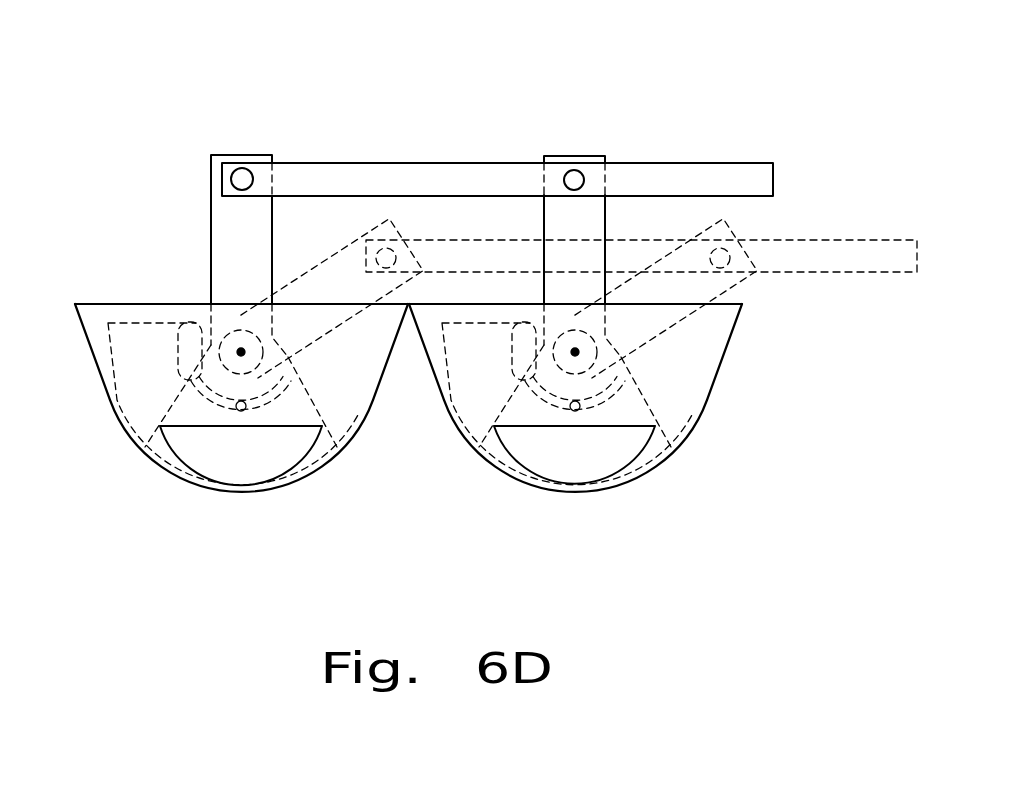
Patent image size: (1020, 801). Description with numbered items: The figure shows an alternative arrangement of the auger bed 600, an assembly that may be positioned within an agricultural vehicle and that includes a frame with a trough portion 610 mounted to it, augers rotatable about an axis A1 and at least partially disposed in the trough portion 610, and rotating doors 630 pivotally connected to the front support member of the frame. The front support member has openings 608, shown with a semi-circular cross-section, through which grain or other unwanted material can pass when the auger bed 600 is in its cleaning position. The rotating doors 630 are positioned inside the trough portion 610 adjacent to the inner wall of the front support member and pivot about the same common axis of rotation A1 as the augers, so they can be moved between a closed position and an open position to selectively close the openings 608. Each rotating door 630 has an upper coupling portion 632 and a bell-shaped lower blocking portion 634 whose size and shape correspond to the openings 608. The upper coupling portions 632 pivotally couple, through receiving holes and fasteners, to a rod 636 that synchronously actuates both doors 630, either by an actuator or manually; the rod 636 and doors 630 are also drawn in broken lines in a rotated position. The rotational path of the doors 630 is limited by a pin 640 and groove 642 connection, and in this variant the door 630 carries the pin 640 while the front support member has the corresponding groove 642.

The auger bed 600 is at (363, 102).
The openings 608 is at (268, 468).
The trough portion 610 is at (732, 340).
The rotating doors 630 is at (222, 238).
The upper coupling portion 632 is at (241, 155).
The lower blocking portion 634 is at (160, 405).
The rod 636 is at (750, 172).
The pin 640 is at (240, 409).
The groove 642 is at (275, 402).
The rotational axis A1 is at (575, 352).